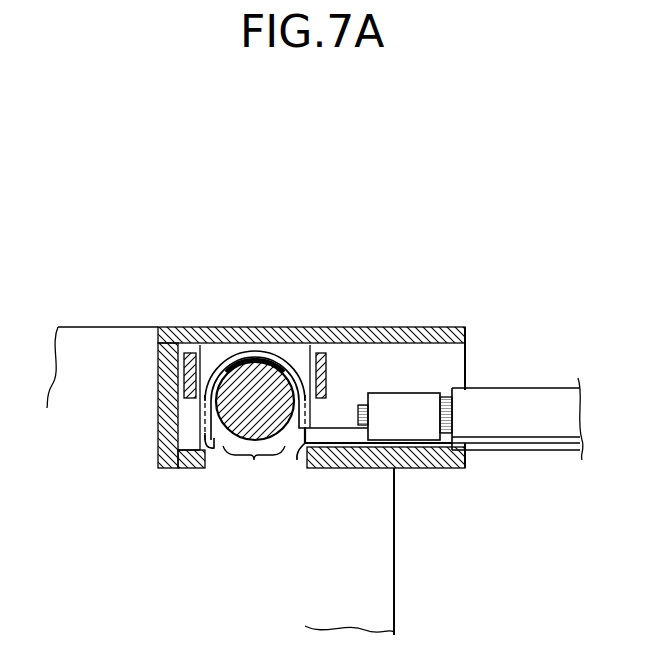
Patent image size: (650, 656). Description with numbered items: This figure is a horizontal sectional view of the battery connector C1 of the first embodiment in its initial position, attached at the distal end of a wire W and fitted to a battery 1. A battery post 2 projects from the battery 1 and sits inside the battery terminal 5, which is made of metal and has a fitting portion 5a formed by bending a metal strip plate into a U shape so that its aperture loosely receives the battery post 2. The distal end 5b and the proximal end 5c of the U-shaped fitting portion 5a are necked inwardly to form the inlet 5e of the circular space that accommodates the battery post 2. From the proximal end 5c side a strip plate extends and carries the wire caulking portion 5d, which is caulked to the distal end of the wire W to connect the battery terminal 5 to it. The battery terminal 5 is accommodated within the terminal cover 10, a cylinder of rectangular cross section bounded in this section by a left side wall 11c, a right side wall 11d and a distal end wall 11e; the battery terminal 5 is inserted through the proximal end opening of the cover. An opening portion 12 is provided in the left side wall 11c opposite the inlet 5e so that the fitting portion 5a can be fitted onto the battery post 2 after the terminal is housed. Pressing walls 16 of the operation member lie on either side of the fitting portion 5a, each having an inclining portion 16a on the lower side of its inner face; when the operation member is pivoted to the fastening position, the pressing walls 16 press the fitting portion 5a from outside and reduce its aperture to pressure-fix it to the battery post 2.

The battery 1 is at (398, 587).
The battery post 2 is at (262, 363).
The battery terminal 5 is at (342, 418).
The fitting portion 5a is at (244, 362).
The distal end 5b is at (214, 450).
The proximal end 5c is at (298, 458).
The wire caulking portion 5d is at (413, 398).
The inlet 5e is at (254, 466).
The terminal cover 10 is at (360, 324).
The left side wall 11c is at (437, 470).
The right side wall 11d is at (445, 327).
The distal end wall 11e is at (158, 441).
The opening portion 12 is at (285, 468).
The pressing wall 16 is at (158, 377).
The inclining portion 16a is at (192, 352).
The battery connector C1 is at (416, 205).
The wire W is at (533, 432).